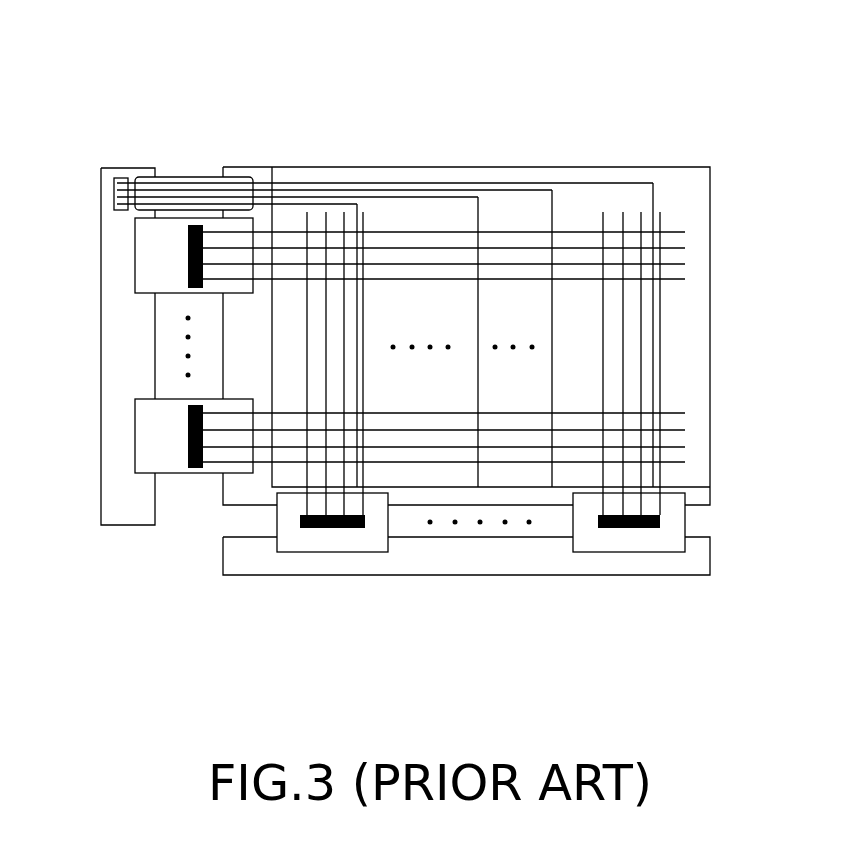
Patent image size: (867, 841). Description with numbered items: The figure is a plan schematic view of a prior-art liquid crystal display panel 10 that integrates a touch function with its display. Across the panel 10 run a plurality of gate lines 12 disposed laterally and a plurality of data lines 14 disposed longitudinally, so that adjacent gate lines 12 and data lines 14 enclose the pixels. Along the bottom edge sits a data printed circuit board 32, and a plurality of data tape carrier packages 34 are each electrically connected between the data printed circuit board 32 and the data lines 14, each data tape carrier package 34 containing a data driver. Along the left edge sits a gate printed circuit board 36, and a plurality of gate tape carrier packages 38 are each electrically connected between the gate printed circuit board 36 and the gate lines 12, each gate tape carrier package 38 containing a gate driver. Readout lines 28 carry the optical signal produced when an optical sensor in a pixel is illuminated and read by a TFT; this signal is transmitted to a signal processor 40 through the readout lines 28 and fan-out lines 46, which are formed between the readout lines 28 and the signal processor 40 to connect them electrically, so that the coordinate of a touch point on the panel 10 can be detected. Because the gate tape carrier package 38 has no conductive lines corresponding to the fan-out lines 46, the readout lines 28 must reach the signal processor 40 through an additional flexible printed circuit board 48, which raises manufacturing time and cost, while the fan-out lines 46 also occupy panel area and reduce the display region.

The liquid crystal display panel 10 is at (147, 94).
The gate lines 12 is at (648, 413).
The data lines 14 is at (603, 222).
The readout lines 28 is at (655, 293).
The data printed circuit board 32 is at (555, 562).
The data tape carrier package 34 is at (345, 537).
The gate printed circuit board 36 is at (117, 491).
The gate tape carrier package 38 is at (175, 453).
The signal processor 40 is at (115, 176).
The fan-out lines 46 is at (492, 190).
The flexible printed circuit board 48 is at (200, 176).